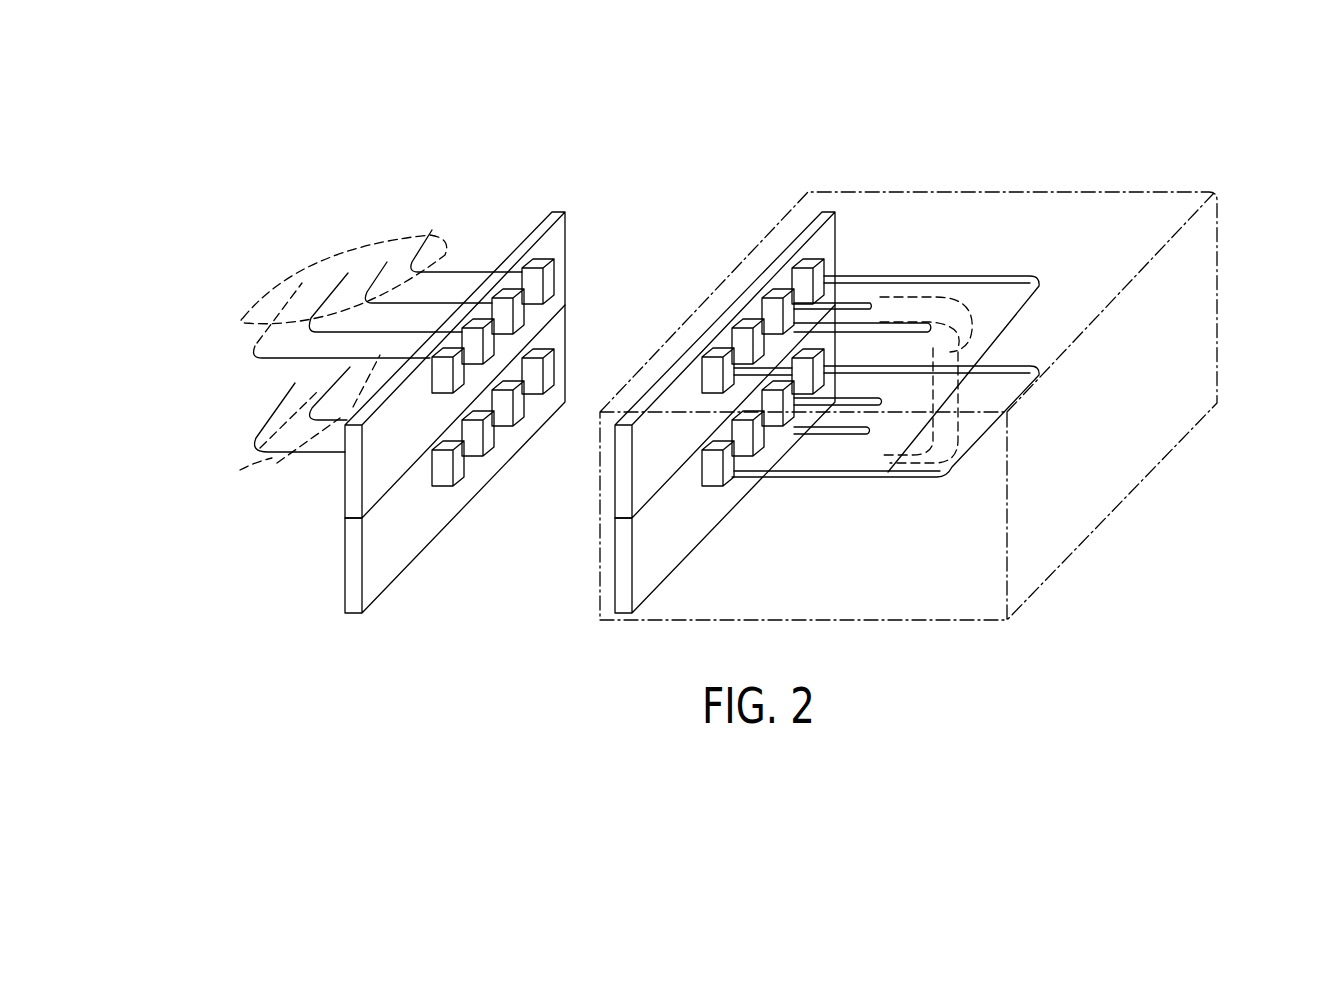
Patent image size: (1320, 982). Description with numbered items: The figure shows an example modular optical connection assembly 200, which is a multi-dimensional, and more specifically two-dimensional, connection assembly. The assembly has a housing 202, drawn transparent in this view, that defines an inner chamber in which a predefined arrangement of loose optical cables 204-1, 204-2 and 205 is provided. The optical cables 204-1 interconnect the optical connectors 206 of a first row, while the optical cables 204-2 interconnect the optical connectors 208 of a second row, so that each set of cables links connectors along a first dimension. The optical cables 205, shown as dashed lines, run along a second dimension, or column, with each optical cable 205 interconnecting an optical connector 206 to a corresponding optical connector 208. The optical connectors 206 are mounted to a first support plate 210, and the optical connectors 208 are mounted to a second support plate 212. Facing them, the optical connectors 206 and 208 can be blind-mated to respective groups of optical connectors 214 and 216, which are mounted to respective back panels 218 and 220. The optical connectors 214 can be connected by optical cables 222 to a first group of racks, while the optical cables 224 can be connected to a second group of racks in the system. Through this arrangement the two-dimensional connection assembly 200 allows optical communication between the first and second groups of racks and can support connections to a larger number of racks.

The modular optical connection assembly 200 is at (1065, 124).
The housing 202 is at (1193, 190).
The optical cables 204-1 is at (920, 320).
The optical cables 204-2 is at (1008, 420).
The optical cables 205 is at (1040, 362).
The optical connectors 206 is at (805, 264).
The optical connectors 208 is at (810, 385).
The first support plate 210 is at (620, 472).
The second support plate 212 is at (620, 590).
The optical connectors 214 is at (535, 264).
The optical connectors 216 is at (540, 385).
The back panel 218 is at (352, 492).
The back panel 220 is at (352, 588).
The optical cables 222 is at (415, 265).
The optical cables 224 is at (272, 455).